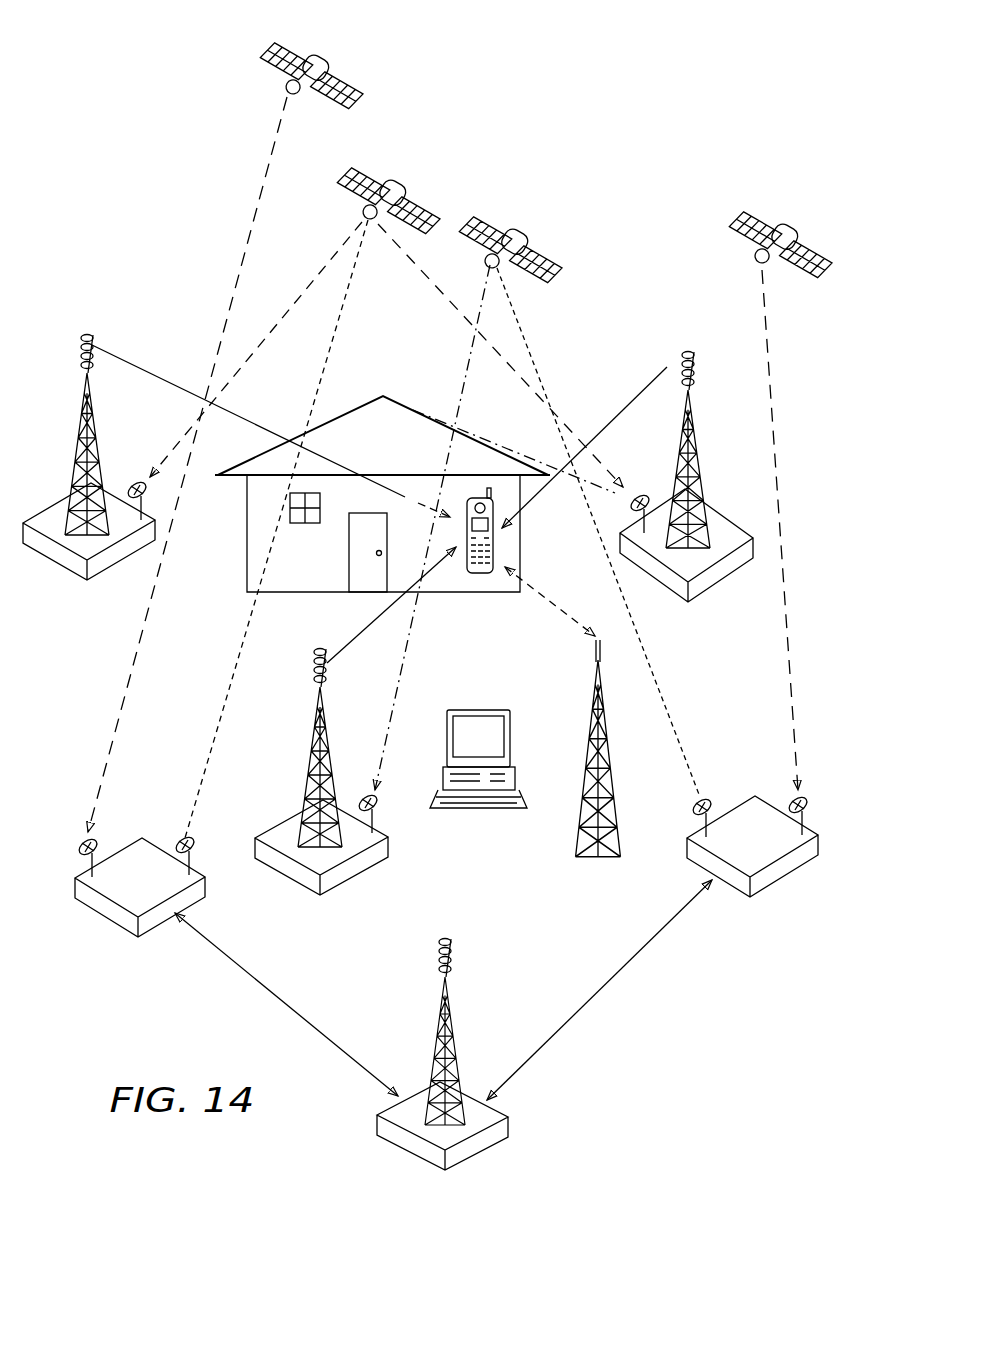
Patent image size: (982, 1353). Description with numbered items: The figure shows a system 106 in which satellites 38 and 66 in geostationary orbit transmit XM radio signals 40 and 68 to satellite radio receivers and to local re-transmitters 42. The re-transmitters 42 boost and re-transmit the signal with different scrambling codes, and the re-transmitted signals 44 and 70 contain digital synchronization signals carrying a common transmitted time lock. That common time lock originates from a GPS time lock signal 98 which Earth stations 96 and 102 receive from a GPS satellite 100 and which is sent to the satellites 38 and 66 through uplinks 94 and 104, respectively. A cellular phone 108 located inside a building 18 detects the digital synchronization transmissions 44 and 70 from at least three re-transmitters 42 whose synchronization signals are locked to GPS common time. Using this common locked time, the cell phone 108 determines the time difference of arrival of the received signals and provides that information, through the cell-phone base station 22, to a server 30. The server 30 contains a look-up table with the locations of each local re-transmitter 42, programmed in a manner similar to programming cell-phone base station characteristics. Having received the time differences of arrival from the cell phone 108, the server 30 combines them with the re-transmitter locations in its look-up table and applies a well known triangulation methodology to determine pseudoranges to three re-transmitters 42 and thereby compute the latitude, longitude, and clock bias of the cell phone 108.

The building 18 is at (293, 594).
The cell-phone base station 22 is at (458, 1125).
The server 30 is at (478, 810).
The satellite 38 is at (404, 186).
The radio signal 40 is at (318, 275).
The re-transmitter 42 is at (73, 460).
The re-transmitted signal 44 is at (130, 366).
The satellite 66 is at (528, 240).
The radio signal 68 is at (463, 374).
The re-transmitted signal 70 is at (347, 650).
The uplink 94 is at (330, 355).
The Earth station 96 is at (100, 908).
The GPS time lock signal 98 is at (253, 198).
The GPS satellite 100 is at (320, 60).
The Earth station 102 is at (773, 872).
The uplink 104 is at (529, 352).
The system 106 is at (556, 126).
The cellular phone 108 is at (483, 578).